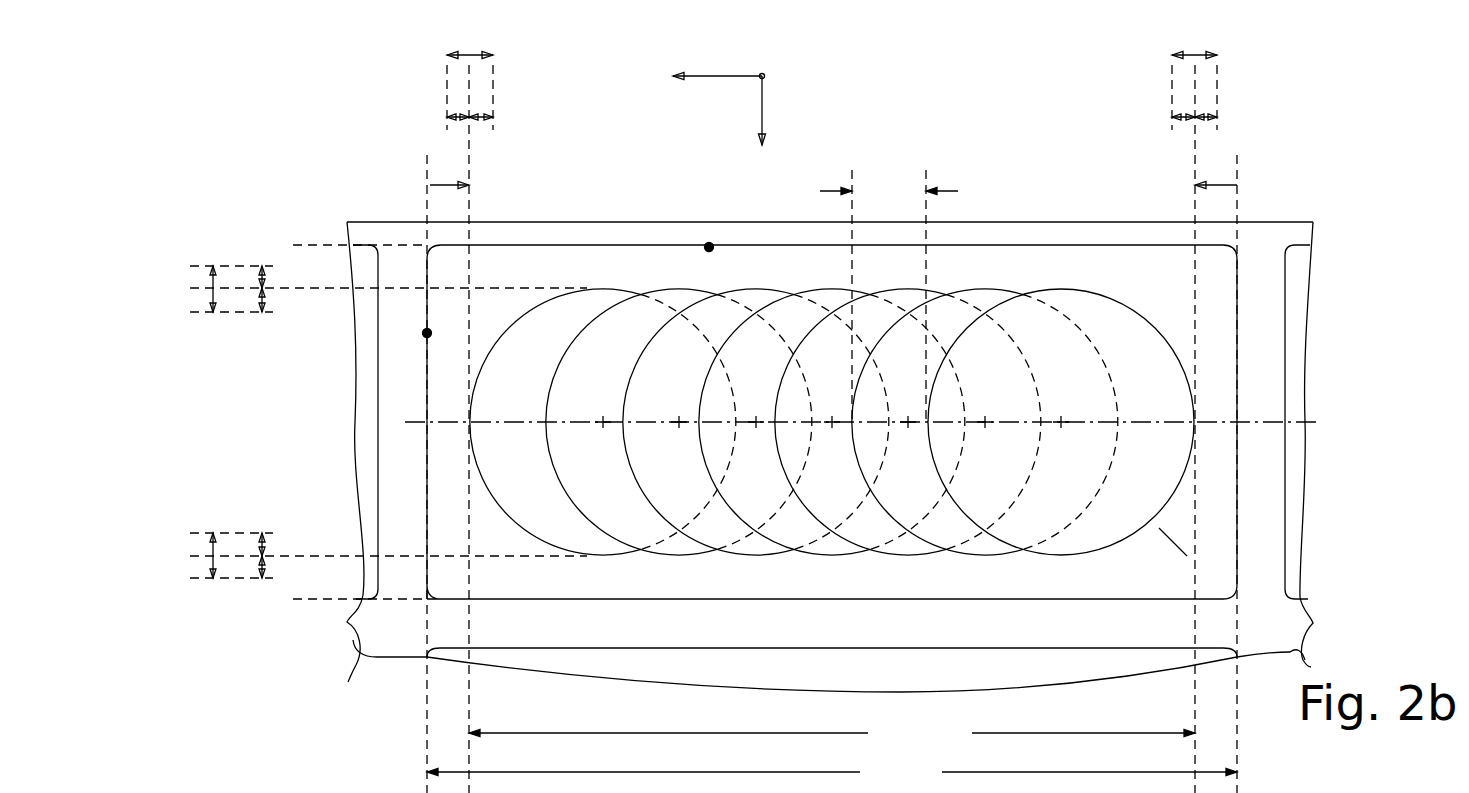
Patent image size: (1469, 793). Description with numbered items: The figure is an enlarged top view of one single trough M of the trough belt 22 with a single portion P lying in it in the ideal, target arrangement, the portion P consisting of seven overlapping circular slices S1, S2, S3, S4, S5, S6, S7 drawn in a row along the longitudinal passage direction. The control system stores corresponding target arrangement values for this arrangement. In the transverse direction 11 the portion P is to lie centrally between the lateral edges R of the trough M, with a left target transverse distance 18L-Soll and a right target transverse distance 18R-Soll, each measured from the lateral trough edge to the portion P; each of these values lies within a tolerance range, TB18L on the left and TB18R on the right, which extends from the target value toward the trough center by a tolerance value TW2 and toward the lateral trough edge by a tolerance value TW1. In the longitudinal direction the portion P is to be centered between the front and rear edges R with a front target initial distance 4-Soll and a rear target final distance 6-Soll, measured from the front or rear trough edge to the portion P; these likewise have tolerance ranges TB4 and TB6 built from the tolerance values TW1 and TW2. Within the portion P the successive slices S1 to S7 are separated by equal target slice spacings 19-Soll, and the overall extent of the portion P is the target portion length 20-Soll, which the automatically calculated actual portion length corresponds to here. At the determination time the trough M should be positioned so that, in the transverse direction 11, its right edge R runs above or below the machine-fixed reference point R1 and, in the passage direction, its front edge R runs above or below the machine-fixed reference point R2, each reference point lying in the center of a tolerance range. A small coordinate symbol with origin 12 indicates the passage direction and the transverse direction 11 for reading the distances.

The trough belt 22 is at (1055, 220).
The trough M is at (829, 468).
The trough edge R is at (1281, 422).
The tolerance range of the start distance TB4 is at (463, 54).
The tolerance range of the end distance TB6 is at (1188, 53).
The tolerance value toward the trough edge TW1 is at (458, 120).
The tolerance value toward the trough center TW2 is at (480, 118).
The front target initial distance 4-Soll is at (430, 185).
The rear target final distance 6-Soll is at (1237, 185).
The right target transverse distance 18R-Soll is at (335, 288).
The left target transverse distance 18L-Soll is at (335, 557).
The tolerance range of the right transverse distance TB18R is at (212, 283).
The tolerance range of the left transverse distance TB18L is at (212, 559).
The machine-fixed reference point R1 is at (709, 247).
The machine-fixed reference point R2 is at (427, 333).
The coordinate origin 12 is at (762, 76).
The transverse direction 11 is at (763, 107).
The target slice spacing 19-Soll is at (878, 193).
The target portion length 20-Soll is at (832, 732).
The portion P is at (1153, 522).
The slice S1 is at (602, 288).
The slice S2 is at (678, 288).
The slice S3 is at (755, 288).
The slice S4 is at (831, 288).
The slice S5 is at (907, 288).
The slice S6 is at (984, 288).
The slice S7 is at (1060, 288).